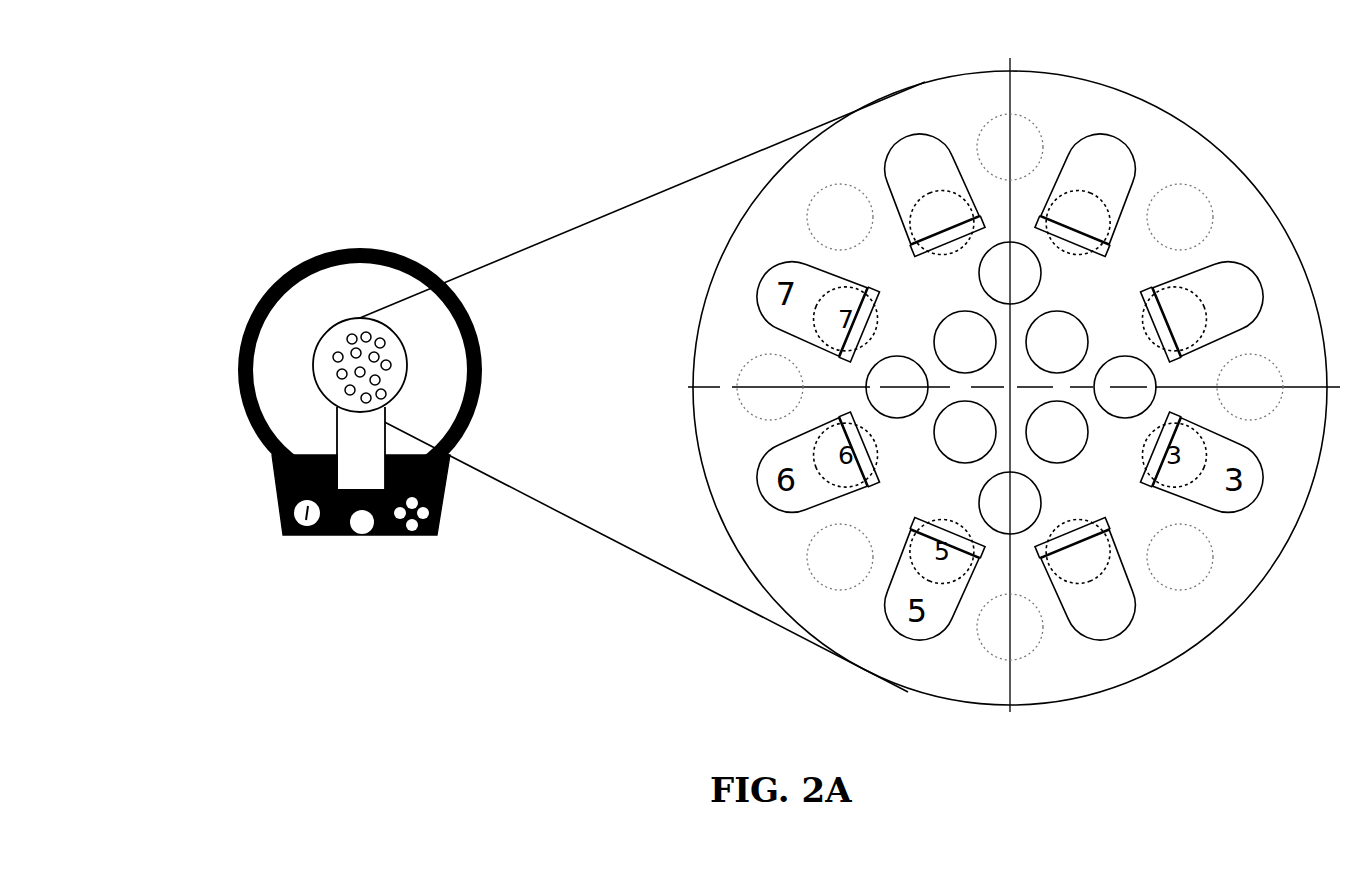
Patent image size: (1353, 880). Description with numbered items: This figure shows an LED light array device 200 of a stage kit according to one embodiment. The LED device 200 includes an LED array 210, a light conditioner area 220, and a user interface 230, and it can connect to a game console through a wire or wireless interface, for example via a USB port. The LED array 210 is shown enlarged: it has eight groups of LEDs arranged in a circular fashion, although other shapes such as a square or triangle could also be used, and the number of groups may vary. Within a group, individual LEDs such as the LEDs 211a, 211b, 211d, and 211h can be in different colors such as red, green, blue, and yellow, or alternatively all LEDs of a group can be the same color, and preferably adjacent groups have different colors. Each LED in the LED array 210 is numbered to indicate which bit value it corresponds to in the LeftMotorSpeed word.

The LED light array device 200 is at (320, 403).
The LED array 210 is at (940, 692).
The LED 211a is at (1105, 137).
The LED 211b is at (1247, 268).
The LED 211d is at (1123, 637).
The LED 211h is at (917, 135).
The light conditioner area 220 is at (350, 284).
The user interface 230 is at (290, 536).